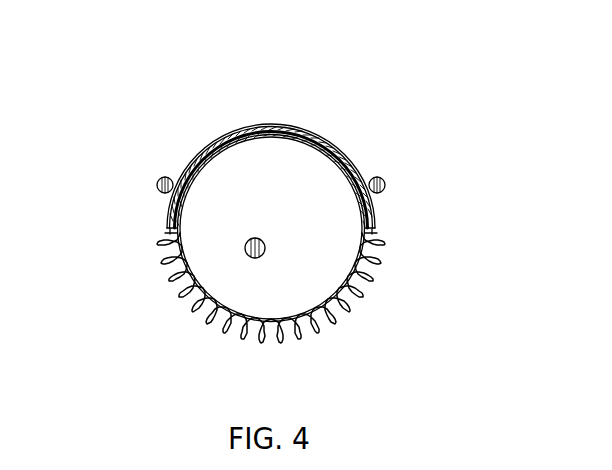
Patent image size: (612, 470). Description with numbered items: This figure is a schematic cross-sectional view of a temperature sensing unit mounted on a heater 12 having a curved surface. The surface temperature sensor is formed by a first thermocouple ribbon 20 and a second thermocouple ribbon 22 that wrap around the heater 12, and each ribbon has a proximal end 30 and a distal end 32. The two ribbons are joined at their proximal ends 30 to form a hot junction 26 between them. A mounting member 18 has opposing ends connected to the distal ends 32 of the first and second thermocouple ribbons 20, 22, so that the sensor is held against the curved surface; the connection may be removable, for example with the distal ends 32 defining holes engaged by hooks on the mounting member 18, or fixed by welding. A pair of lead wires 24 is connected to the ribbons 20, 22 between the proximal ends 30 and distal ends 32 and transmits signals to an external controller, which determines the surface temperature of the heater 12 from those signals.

The heater 12 is at (247, 256).
The mounting member 18 is at (362, 298).
The first thermocouple ribbon 20 is at (213, 133).
The second thermocouple ribbon 22 is at (332, 133).
The lead wires 24 is at (158, 180).
The hot junction 26 is at (270, 137).
The proximal end 30 is at (243, 132).
The distal end 32 is at (168, 223).